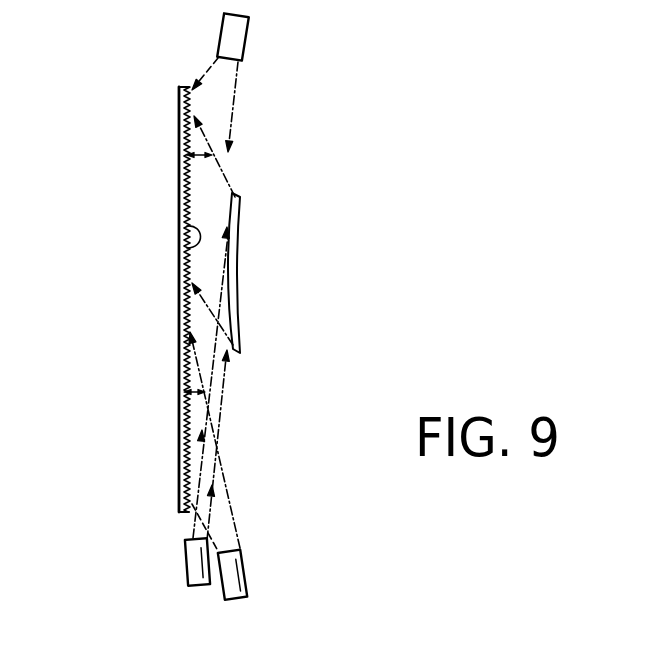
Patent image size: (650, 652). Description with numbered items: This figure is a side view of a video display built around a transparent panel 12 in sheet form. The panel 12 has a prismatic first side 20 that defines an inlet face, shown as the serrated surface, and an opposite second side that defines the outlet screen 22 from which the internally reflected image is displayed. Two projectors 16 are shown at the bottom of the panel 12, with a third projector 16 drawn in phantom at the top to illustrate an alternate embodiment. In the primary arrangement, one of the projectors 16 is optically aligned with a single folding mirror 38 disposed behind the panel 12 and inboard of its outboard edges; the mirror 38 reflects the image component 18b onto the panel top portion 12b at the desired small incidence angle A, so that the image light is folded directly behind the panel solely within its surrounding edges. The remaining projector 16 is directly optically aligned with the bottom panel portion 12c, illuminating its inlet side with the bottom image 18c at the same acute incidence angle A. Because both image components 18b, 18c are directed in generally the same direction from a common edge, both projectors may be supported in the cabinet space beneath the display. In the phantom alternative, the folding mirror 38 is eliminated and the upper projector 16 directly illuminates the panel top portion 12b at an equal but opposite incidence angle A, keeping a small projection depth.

The panel 12 is at (127, 305).
The panel top portion 12b is at (188, 233).
The panel bottom portion 12c is at (178, 487).
The projector 16 is at (248, 42).
The image component 18b is at (202, 113).
The bottom image 18c is at (220, 528).
The prismatic first side 20 is at (190, 227).
The outlet screen 22 is at (178, 187).
The folding mirror 38 is at (238, 258).
The incidence angle A is at (200, 158).